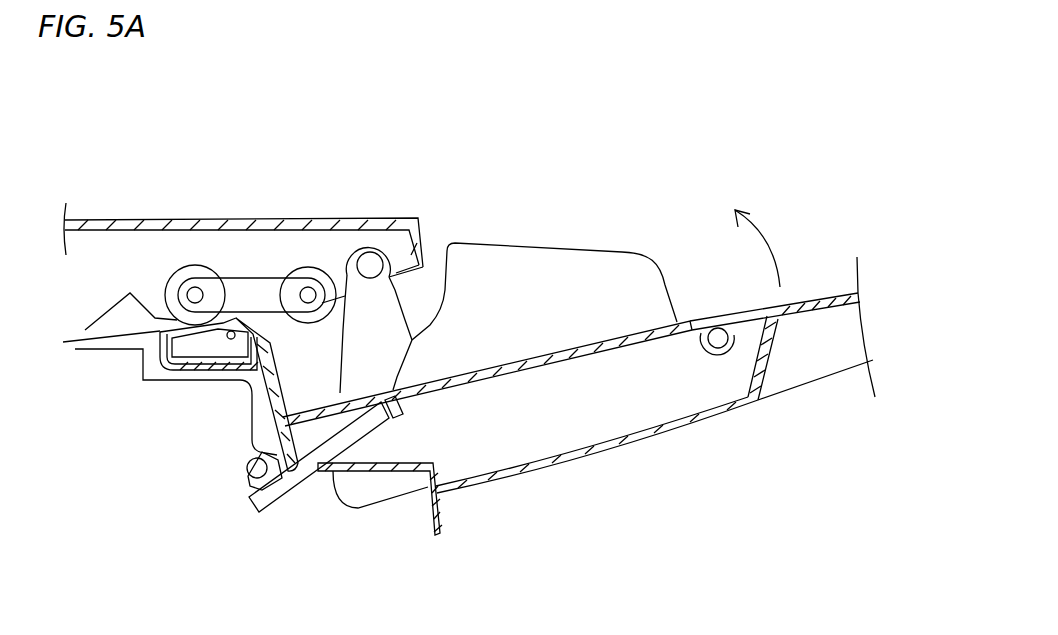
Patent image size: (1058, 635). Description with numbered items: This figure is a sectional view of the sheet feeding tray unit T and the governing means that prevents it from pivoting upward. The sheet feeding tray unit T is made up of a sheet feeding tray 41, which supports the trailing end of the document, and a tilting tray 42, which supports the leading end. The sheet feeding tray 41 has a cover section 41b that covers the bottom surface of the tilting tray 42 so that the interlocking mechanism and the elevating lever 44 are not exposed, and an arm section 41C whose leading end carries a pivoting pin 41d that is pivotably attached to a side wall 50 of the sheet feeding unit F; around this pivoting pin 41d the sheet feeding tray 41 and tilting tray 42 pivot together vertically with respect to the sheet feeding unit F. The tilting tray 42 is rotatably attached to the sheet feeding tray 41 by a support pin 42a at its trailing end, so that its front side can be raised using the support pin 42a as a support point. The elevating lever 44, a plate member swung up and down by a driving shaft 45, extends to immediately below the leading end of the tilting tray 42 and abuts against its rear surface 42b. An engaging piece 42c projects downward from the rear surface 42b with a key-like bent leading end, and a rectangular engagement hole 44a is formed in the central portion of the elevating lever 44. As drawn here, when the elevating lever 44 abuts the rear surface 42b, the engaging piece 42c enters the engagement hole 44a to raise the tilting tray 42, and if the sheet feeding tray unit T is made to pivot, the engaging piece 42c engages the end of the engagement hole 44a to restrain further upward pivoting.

The sheet feeding unit F is at (132, 214).
The side wall 50 is at (208, 245).
The sheet feeding tray 41 is at (798, 300).
The cover section 41b is at (630, 447).
The arm section 41C is at (380, 333).
The pivoting pin 41d is at (369, 262).
The tilting tray 42 is at (606, 344).
The support pin 42a is at (713, 340).
The rear surface 42b is at (467, 383).
The engaging piece 42c is at (280, 454).
The elevating lever 44 is at (257, 498).
The engagement hole 44a is at (338, 455).
The driving shaft 45 is at (247, 462).
The sheet feeding tray unit T is at (684, 228).